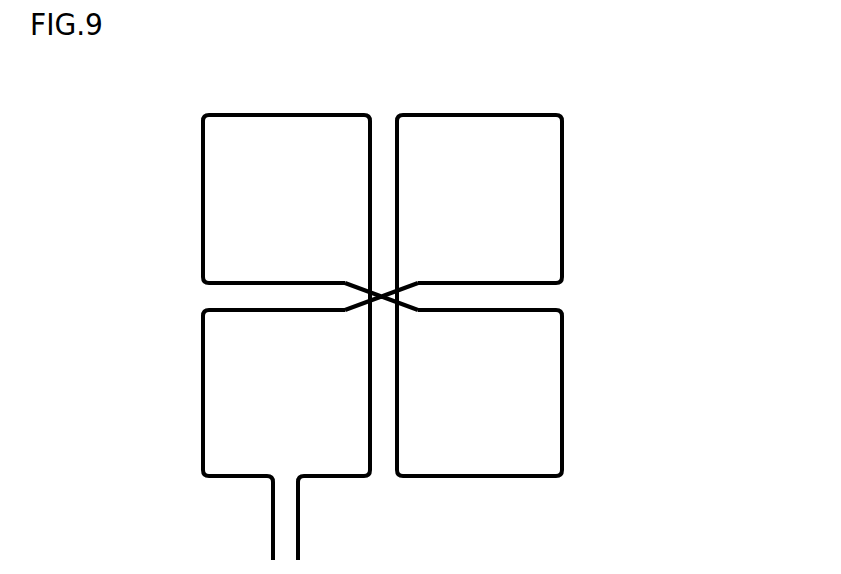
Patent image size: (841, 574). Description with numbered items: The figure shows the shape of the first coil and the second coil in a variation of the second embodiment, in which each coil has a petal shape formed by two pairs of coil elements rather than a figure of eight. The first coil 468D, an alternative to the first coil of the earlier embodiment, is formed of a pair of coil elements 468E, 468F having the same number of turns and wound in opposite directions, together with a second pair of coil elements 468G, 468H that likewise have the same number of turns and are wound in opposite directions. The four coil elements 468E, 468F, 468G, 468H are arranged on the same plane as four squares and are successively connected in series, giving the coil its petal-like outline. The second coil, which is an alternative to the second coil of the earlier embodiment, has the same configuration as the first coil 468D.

The first coil 468D is at (302, 79).
The coil element 468H is at (203, 198).
The coil element 468F is at (562, 199).
The coil element 468E is at (203, 394).
The coil element 468G is at (562, 395).